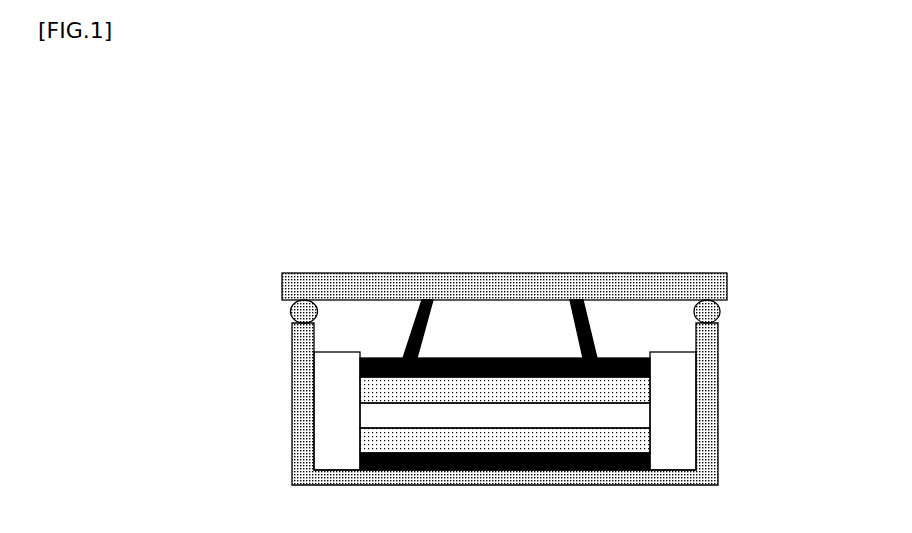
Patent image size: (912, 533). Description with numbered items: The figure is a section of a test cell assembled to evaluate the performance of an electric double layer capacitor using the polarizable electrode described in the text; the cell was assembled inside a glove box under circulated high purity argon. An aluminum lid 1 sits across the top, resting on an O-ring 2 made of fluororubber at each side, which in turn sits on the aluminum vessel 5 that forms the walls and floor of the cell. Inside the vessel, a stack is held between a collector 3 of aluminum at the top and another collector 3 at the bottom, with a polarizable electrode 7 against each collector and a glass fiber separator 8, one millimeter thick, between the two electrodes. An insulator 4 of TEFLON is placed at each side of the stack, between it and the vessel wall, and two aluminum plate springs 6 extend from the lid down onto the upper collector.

The lid 1 is at (592, 274).
The O-ring 2 is at (721, 312).
The collector 3 is at (650, 368).
The insulator 4 is at (335, 463).
The vessel 5 is at (292, 447).
The plate spring 6 is at (417, 313).
The polarizable electrode 7 is at (367, 392).
The separator 8 is at (638, 415).